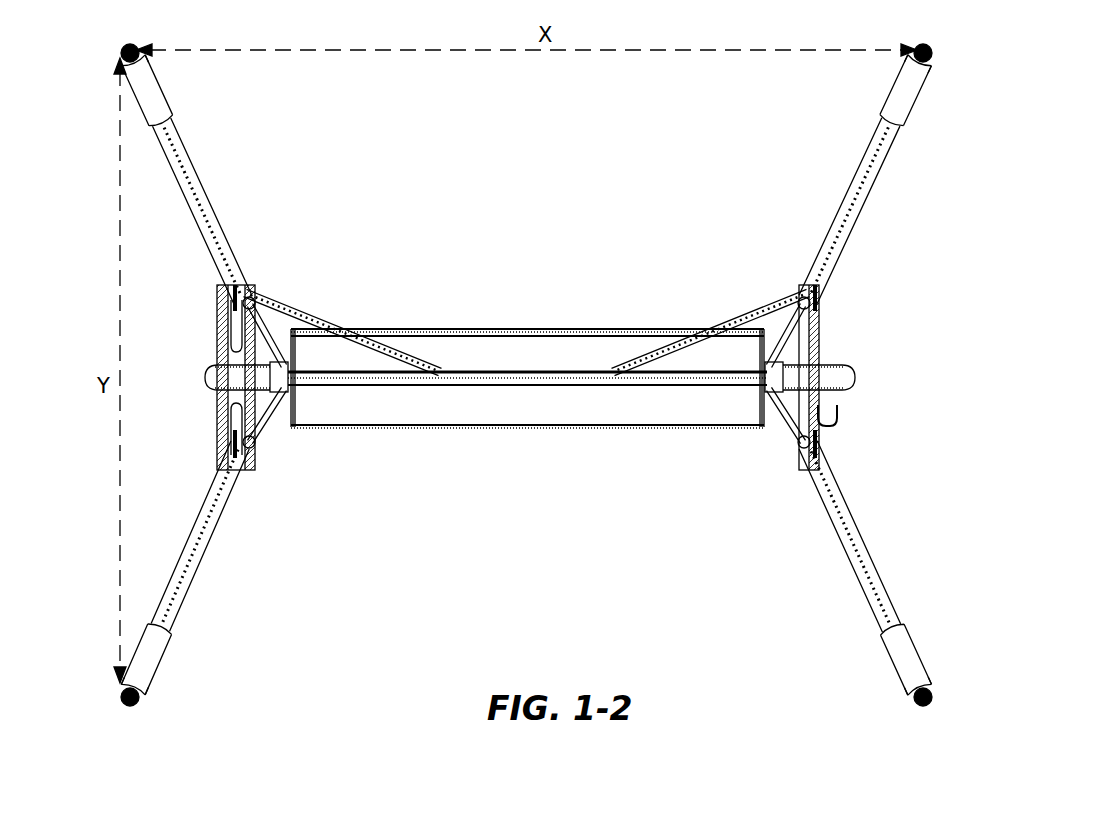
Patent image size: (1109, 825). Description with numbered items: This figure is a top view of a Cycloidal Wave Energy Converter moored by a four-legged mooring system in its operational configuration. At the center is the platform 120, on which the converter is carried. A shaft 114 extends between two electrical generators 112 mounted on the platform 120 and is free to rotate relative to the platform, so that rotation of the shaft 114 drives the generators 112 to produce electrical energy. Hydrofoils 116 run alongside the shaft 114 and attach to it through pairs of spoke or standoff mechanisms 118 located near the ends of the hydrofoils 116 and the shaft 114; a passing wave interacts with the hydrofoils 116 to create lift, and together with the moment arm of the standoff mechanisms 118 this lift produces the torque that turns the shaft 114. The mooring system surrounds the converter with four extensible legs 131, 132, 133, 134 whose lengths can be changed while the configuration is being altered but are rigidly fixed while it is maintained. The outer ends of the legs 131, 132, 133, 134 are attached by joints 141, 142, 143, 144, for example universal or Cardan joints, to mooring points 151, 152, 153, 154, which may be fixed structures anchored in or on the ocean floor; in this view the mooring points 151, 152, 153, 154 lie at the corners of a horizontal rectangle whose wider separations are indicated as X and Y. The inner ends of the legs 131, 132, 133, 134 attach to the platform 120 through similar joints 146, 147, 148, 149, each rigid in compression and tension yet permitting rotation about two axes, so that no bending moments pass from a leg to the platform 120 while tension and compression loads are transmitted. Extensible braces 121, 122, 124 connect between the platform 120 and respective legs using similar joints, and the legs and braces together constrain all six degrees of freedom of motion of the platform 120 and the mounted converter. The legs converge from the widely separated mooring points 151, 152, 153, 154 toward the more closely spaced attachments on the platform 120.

The electrical generator 112 is at (210, 378).
The shaft 114 is at (516, 387).
The hydrofoil 116 is at (516, 322).
The standoff mechanism 118 is at (297, 408).
The platform 120 is at (222, 432).
The brace 121 is at (763, 303).
The brace 122 is at (826, 432).
The brace 124 is at (290, 303).
The leg 131 is at (868, 200).
The leg 132 is at (863, 548).
The leg 133 is at (190, 548).
The leg 134 is at (186, 200).
The joint 141 is at (932, 66).
The joint 142 is at (911, 690).
The joint 143 is at (142, 690).
The joint 144 is at (121, 66).
The joint 146 is at (805, 290).
The joint 147 is at (801, 450).
The joint 148 is at (252, 450).
The joint 149 is at (250, 290).
The mooring point 151 is at (932, 45).
The mooring point 152 is at (931, 707).
The mooring point 153 is at (122, 707).
The mooring point 154 is at (131, 45).